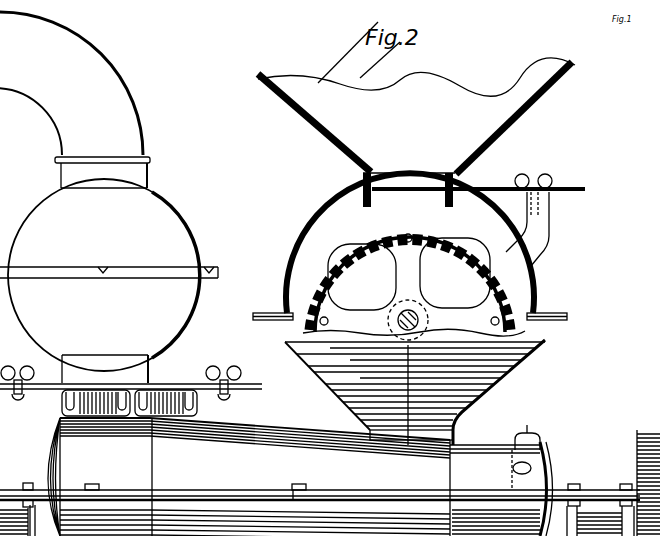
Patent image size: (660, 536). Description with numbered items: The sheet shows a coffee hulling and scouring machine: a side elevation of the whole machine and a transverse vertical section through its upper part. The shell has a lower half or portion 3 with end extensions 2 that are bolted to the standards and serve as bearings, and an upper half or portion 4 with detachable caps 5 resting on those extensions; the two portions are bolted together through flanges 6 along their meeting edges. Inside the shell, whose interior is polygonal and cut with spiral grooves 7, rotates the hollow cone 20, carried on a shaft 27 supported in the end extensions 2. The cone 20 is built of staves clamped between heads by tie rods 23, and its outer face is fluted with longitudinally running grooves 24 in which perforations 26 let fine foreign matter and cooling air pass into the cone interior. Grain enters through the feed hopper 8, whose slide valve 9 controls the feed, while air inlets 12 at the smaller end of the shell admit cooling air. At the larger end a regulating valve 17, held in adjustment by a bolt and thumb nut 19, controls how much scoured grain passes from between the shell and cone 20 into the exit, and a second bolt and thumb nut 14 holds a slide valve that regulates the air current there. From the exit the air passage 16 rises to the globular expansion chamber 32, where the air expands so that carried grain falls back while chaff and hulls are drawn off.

In FIG. 1, the end extensions 2 is at (415, 392).
In FIG. 1, the lower half or portion of the shell 3 is at (330, 483).
In FIG. 1, the upper half or portion of the shell 4 is at (300, 477).
In FIG. 1, the detachable caps 5 is at (4, 484).
In FIG. 1, the flanges 6 is at (607, 478).
In FIG. 2, the spiral grooves 7 is at (309, 256).
In FIG. 2, the feed hopper 8 is at (416, 116).
In FIG. 2, the slide valve 9 is at (490, 186).
In FIG. 1, the air inlets 12 is at (549, 458).
In FIG. 1, the bolt and thumb nut 14 is at (18, 368).
In FIG. 1, the air passage 16 is at (96, 387).
In FIG. 1, the regulating valve 17 is at (162, 386).
In FIG. 1, the bolt and thumb nut 19 is at (228, 368).
In FIG. 2, the cone 20 is at (512, 332).
In FIG. 2, the tie rods 23 is at (329, 321).
In FIG. 2, the longitudinally running grooves 24 is at (364, 224).
In FIG. 2, the perforations 26 is at (343, 248).
In FIG. 2, the shaft 27 is at (416, 316).
In FIG. 1, the expansion chamber 32 is at (109, 281).